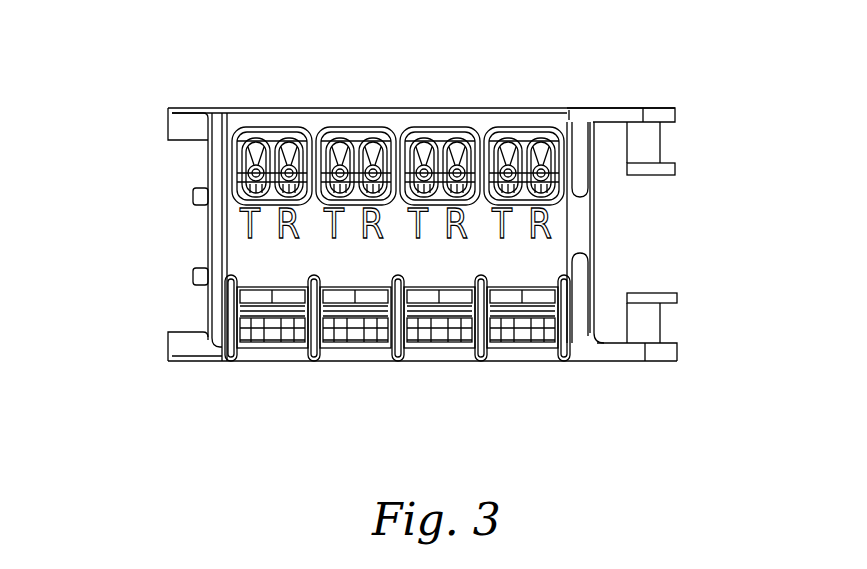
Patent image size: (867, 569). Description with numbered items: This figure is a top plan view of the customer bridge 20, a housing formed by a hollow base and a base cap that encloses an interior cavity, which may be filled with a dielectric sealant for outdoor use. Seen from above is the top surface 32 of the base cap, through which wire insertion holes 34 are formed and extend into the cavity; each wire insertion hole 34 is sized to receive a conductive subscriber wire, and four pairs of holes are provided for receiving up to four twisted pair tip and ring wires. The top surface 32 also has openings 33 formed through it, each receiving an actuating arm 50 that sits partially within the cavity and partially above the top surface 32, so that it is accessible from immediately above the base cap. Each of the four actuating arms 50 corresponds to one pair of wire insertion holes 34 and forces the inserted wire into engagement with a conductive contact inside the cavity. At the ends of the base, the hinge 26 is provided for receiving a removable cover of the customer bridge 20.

The customer bridge 20 is at (396, 227).
The hinge 26 is at (650, 148).
The top surface 32 is at (344, 347).
The opening 33 is at (240, 298).
The wire insertion hole 34 is at (287, 150).
The actuating arm 50 is at (425, 330).